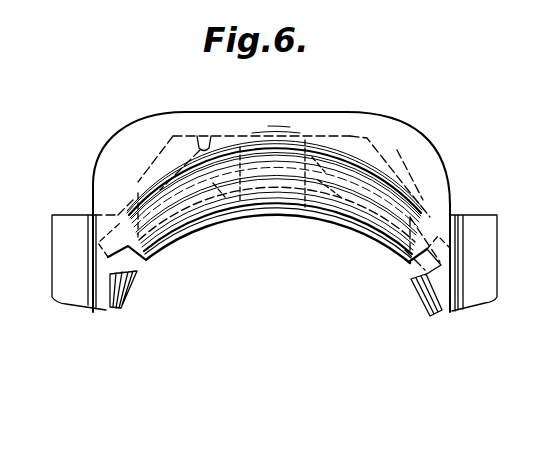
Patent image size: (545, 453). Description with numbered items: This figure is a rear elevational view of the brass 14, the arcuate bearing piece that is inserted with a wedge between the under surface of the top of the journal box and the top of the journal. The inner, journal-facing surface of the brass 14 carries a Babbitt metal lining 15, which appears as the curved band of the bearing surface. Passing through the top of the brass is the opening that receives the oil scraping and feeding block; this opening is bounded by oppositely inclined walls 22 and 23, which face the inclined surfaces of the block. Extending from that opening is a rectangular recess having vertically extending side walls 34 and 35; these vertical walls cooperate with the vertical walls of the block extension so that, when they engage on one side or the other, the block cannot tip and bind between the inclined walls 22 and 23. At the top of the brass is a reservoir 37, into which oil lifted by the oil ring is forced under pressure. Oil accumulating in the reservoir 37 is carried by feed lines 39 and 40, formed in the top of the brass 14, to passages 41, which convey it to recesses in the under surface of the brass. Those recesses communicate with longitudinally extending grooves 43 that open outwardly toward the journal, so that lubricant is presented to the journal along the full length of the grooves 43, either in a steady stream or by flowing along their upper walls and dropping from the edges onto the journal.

The brass 14 is at (322, 114).
The Babbitt metal lining 15 is at (213, 211).
The inclined wall 22 is at (320, 169).
The inclined wall 23 is at (223, 182).
The side wall 34 is at (303, 174).
The side wall 35 is at (244, 181).
The reservoir 37 is at (210, 148).
The feed line 39 is at (373, 163).
The feed line 40 is at (178, 161).
The passage 41 is at (117, 233).
The longitudinally extending groove 43 is at (131, 268).